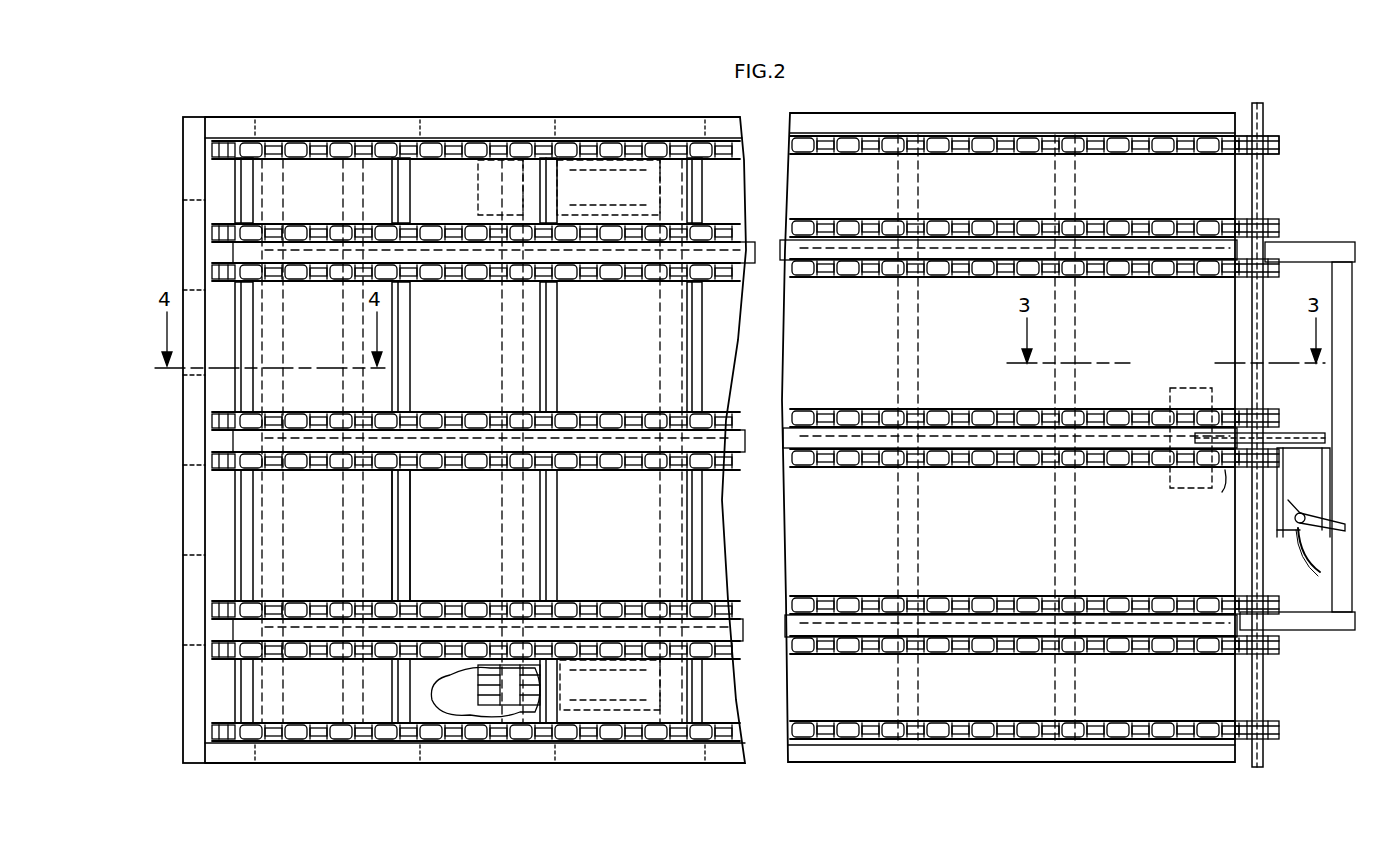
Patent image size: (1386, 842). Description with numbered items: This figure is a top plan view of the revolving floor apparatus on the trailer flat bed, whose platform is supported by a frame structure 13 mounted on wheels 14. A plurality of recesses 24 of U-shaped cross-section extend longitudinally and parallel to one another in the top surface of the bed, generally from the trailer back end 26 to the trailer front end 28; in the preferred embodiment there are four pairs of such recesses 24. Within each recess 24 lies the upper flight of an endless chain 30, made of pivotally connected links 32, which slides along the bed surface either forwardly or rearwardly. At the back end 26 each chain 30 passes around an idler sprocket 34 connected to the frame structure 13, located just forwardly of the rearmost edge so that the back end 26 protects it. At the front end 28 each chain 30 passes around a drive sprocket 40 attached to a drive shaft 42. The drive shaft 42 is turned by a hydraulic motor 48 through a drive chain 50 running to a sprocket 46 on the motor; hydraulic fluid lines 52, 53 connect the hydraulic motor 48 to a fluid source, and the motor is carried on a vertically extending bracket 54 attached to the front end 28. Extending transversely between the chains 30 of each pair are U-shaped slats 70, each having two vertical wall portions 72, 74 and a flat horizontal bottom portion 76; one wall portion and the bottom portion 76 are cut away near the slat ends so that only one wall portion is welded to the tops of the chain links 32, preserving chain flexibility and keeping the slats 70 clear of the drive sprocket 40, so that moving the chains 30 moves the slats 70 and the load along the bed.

The frame structure 13 is at (200, 212).
The wheels 14 is at (478, 200).
The recesses 24 is at (425, 160).
The trailer back end 26 is at (205, 530).
The trailer front end 28 is at (1237, 113).
The endless chain 30 is at (1083, 136).
The links 32 is at (632, 470).
The idler sprocket 34 is at (445, 441).
The drive sprocket 40 is at (1279, 148).
The drive shaft 42 is at (1263, 190).
The sprocket 46 is at (1310, 432).
The hydraulic motor 48 is at (1300, 506).
The drive chain 50 is at (1225, 497).
The hydraulic fluid line 52 is at (1320, 535).
The hydraulic fluid line 53 is at (1310, 580).
The vertically extending bracket 54 is at (1277, 505).
The slats 70 is at (253, 325).
The wall portion 72 is at (410, 545).
The wall portion 74 is at (392, 525).
The bottom portion 76 is at (410, 312).